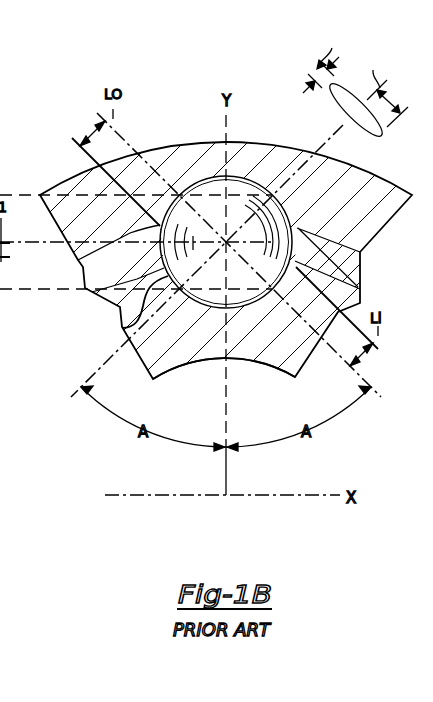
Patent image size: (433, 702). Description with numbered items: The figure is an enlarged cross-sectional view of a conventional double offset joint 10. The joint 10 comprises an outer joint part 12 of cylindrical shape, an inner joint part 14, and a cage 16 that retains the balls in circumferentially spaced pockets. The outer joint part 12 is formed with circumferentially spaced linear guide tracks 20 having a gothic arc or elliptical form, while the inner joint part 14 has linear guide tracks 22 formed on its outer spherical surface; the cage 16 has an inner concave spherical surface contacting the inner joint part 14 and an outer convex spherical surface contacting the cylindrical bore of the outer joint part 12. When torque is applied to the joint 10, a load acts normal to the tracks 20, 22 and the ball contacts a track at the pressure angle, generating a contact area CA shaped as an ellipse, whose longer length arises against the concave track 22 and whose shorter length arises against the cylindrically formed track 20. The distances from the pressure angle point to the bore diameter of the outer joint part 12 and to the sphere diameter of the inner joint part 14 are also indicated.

The double offset joint 10 is at (180, 122).
The outer joint part 12 is at (377, 231).
The inner joint part 14 is at (257, 360).
The cage 16 is at (361, 271).
The linear guide track 20 is at (207, 178).
The linear guide track 22 is at (128, 326).
The contact area CA is at (384, 134).